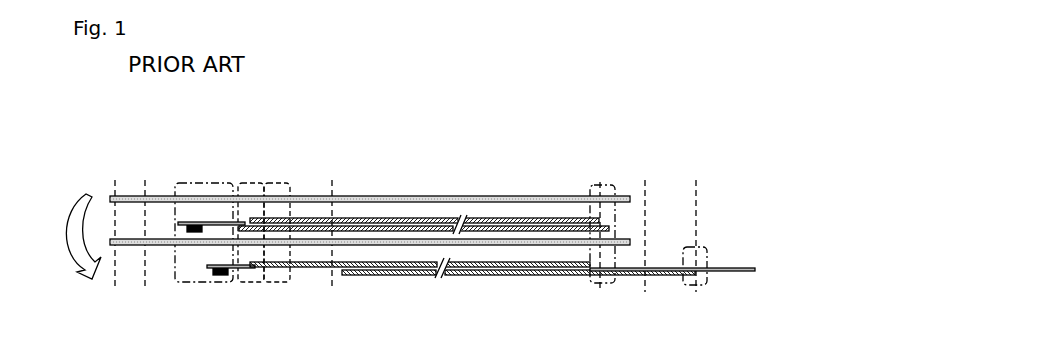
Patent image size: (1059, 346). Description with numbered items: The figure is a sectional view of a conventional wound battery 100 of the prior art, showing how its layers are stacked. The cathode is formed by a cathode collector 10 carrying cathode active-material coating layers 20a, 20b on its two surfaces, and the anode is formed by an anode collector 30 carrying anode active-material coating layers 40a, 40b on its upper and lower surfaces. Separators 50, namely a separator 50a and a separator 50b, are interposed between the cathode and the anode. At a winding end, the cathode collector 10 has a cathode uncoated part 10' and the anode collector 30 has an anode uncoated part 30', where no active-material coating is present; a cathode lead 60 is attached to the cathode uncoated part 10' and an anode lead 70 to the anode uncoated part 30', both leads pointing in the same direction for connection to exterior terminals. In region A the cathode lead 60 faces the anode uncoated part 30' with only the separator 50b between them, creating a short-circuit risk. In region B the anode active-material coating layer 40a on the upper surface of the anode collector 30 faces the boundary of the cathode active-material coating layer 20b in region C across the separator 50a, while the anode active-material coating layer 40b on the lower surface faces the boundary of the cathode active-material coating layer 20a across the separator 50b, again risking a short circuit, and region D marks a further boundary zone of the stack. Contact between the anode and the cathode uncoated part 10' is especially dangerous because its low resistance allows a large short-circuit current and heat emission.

The optical coupling structure (prior art) 100 is at (579, 124).
The cathode collector 10 is at (672, 244).
The cathode uncoated part 10' is at (459, 276).
The cathode active-material coating layer 20a is at (371, 272).
The cathode active-material coating layer 20b is at (511, 277).
The anode collector 30 is at (424, 194).
The anode uncoated part 30' is at (211, 212).
The anode active-material coating layer 40a is at (523, 218).
The anode active-material coating layer 40b is at (415, 219).
The separator 50 is at (682, 166).
The separator 50a is at (630, 199).
The separator 50b is at (632, 239).
The cathode lead 60 is at (227, 283).
The anode lead 70 is at (178, 226).
The region A is at (192, 285).
The region B is at (252, 285).
The region C is at (343, 285).
The region D is at (280, 285).